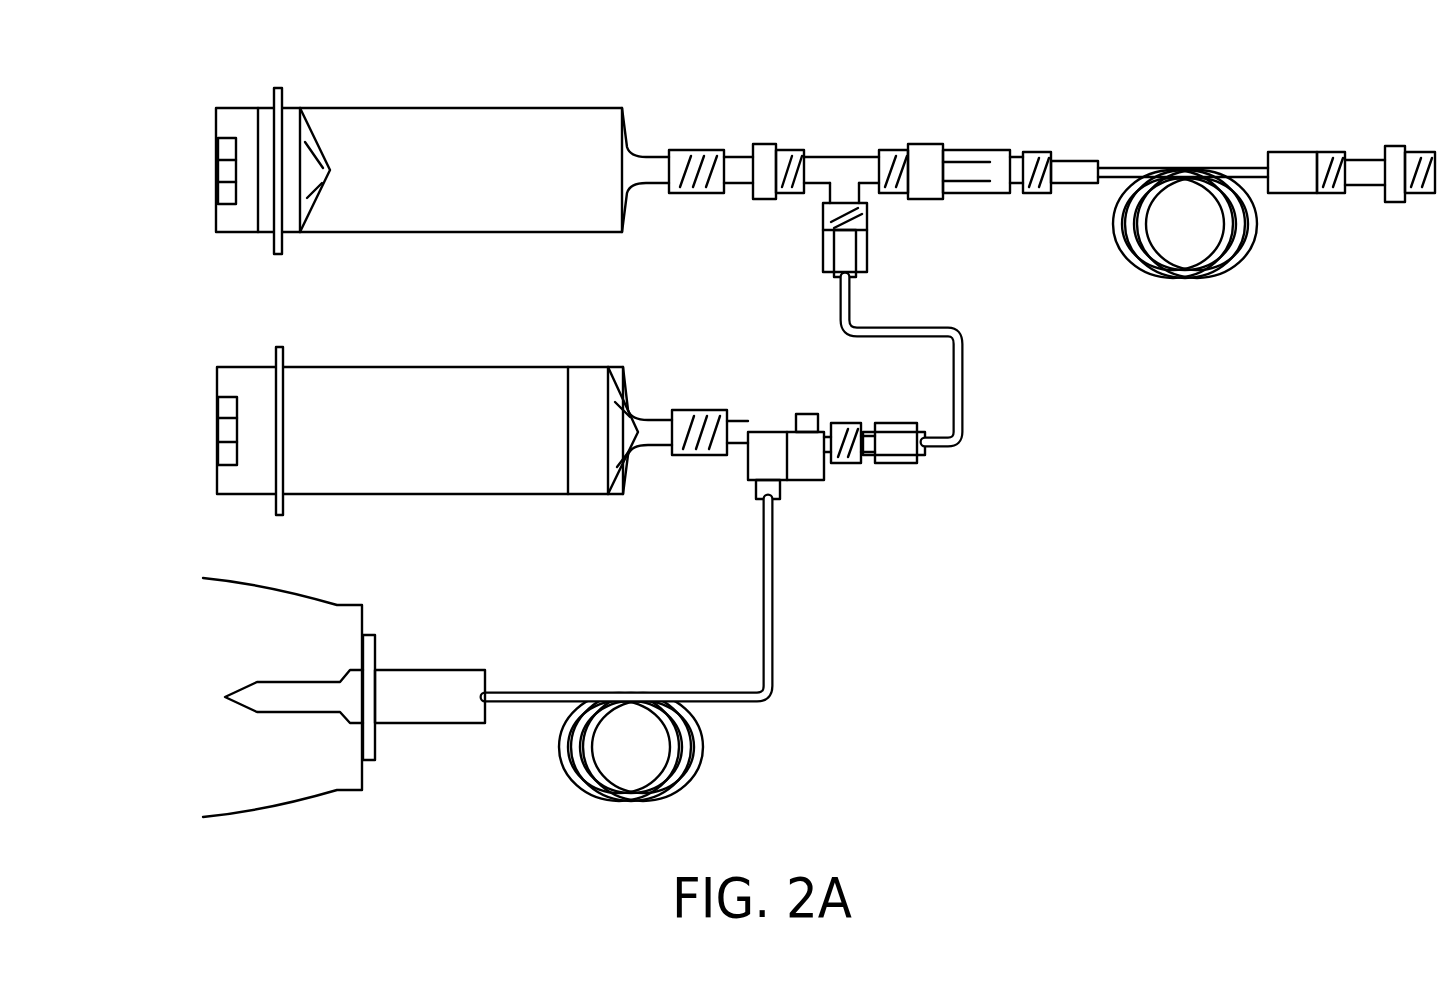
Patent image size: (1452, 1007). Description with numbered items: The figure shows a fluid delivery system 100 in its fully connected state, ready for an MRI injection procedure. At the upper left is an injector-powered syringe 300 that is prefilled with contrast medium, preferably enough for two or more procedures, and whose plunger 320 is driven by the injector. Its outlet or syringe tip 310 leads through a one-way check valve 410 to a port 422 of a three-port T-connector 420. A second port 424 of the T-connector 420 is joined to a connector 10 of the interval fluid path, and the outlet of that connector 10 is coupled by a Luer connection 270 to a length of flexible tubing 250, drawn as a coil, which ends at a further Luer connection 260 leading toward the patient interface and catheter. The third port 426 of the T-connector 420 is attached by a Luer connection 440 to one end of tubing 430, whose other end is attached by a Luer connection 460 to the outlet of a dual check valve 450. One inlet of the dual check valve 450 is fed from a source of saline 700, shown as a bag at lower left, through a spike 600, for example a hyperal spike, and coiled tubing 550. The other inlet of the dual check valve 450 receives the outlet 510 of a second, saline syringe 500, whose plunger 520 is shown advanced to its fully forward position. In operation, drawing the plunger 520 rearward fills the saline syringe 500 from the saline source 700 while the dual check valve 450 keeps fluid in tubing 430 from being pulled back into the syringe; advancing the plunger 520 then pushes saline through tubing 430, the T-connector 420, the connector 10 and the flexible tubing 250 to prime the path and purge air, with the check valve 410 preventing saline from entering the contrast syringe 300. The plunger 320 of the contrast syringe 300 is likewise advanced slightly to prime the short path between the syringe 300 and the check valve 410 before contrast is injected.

The connector 10 is at (927, 138).
The fluid delivery system 100 is at (895, 640).
The flexible tubing 250 is at (1205, 280).
The Luer connection 260 is at (1323, 142).
The Luer connection 270 is at (1068, 148).
The syringe 300 is at (433, 108).
The syringe outlet 310 is at (693, 147).
The plunger 320 is at (290, 223).
The one-way check valve 410 is at (770, 142).
The three-port T-connector 420 is at (830, 155).
The port 422 is at (818, 195).
The second port 424 is at (877, 155).
The third port 426 is at (867, 194).
The tubing 430 is at (965, 340).
The Luer connection 440 is at (862, 272).
The dual check valve 450 is at (820, 487).
The Luer connection 460 is at (913, 467).
The second syringe 500 is at (393, 367).
The outlet 510 is at (657, 413).
The plunger 520 is at (597, 480).
The tubing 550 is at (725, 707).
The spike 600 is at (422, 668).
The source of saline 700 is at (245, 810).